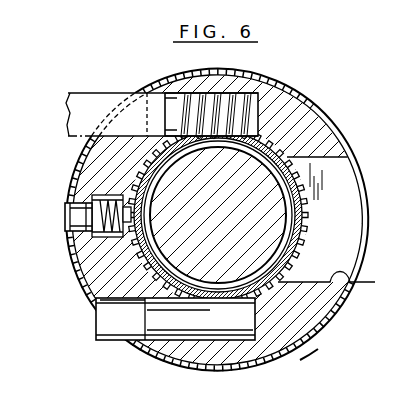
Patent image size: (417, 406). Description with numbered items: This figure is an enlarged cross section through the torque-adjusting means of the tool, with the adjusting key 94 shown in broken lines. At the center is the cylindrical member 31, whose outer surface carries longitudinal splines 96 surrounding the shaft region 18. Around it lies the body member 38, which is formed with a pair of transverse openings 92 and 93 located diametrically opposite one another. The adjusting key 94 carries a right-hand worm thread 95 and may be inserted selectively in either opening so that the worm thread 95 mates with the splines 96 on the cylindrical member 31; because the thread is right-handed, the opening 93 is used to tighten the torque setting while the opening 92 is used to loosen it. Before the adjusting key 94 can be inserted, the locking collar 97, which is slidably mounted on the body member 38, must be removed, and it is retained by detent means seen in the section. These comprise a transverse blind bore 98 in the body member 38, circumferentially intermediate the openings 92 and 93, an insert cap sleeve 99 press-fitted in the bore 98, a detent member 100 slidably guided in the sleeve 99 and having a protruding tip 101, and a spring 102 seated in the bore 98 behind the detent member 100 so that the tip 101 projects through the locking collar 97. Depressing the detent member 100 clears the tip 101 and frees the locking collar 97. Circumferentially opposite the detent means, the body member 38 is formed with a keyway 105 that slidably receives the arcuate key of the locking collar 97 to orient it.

The shaft 18 is at (257, 231).
The cylindrical member 31 is at (284, 200).
The body member 38 is at (312, 126).
The transverse opening 92 is at (250, 92).
The transverse opening 93 is at (245, 322).
The adjusting key 94 is at (105, 92).
The worm thread 95 is at (190, 92).
The longitudinal splines 96 is at (307, 107).
The locking collar 97 is at (323, 348).
The transverse blind bore 98 is at (96, 242).
The insert cap sleeve 99 is at (90, 238).
The detent member 100 is at (99, 297).
The protruding tip 101 is at (65, 210).
The spring 102 is at (111, 194).
The keyway 105 is at (343, 282).